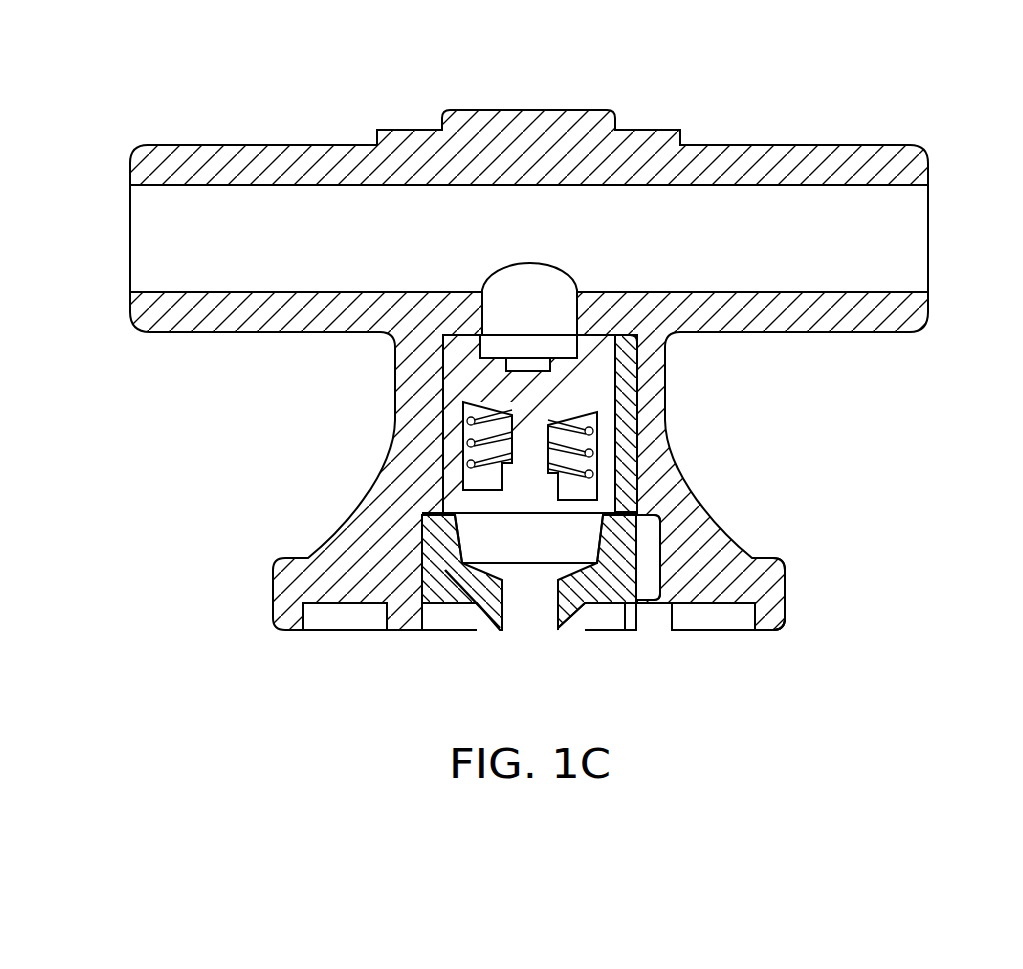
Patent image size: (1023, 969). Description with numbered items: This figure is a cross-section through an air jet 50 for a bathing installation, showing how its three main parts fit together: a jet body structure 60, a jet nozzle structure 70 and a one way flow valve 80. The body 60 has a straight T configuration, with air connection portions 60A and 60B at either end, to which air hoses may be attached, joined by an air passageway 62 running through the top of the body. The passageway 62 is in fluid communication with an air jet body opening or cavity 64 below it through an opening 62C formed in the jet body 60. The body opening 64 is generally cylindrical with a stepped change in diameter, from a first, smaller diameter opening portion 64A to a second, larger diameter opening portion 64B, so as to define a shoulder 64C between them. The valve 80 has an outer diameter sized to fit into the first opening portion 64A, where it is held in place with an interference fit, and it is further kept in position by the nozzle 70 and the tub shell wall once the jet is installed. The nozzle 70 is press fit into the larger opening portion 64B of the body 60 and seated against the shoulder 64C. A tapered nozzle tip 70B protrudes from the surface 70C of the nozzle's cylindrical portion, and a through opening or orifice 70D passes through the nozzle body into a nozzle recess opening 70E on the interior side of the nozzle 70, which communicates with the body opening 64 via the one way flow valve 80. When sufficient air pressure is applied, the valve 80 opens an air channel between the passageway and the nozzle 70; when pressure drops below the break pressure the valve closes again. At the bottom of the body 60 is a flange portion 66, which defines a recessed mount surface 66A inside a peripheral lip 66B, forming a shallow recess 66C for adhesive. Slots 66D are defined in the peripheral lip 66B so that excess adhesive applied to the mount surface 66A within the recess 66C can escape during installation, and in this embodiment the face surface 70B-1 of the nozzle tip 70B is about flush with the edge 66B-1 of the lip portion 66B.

The air jet 50 is at (724, 58).
The jet body structure 60 is at (712, 432).
The air connection portion 60A is at (147, 151).
The air connection portion 60B is at (913, 157).
The air passageway 62 is at (502, 239).
The opening 62C is at (532, 310).
The air jet body opening 64 is at (442, 437).
The opening portion 64A is at (650, 352).
The opening portion 64B is at (660, 558).
The shoulder 64C is at (433, 513).
The flange portion 66 is at (280, 596).
The mount surface 66A is at (775, 568).
The peripheral lip 66B is at (777, 617).
The edge of lip portion 66B-1 is at (767, 630).
The recess 66C is at (702, 617).
The slot 66D is at (400, 620).
The jet nozzle structure 70 is at (483, 632).
The nozzle tip 70B is at (580, 610).
The face surface 70B-1 is at (500, 632).
The surface 70C is at (625, 630).
The orifice 70D is at (527, 612).
The nozzle recess opening 70E is at (556, 552).
The one way flow valve 80 is at (480, 378).